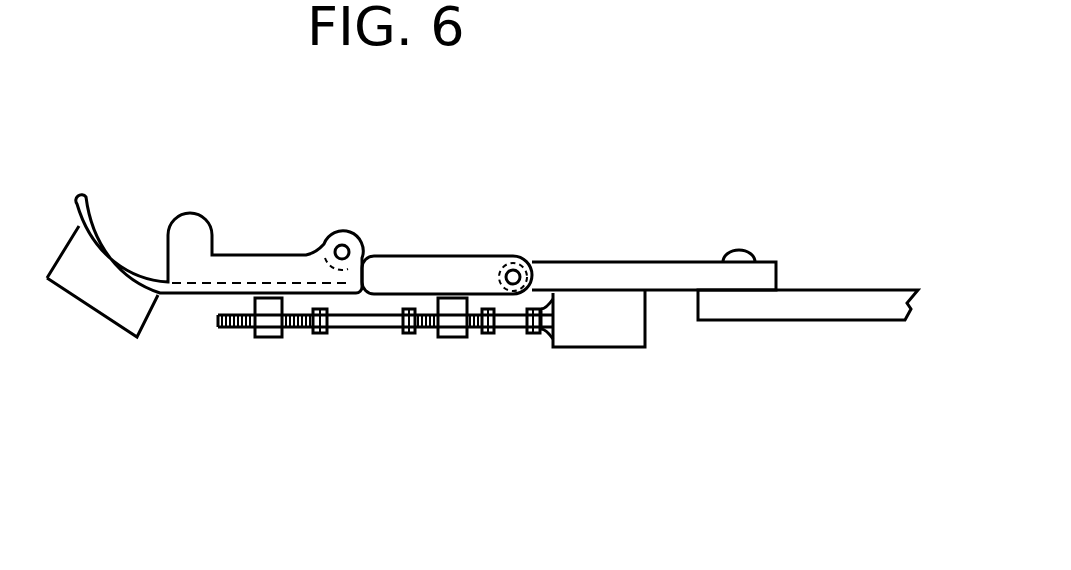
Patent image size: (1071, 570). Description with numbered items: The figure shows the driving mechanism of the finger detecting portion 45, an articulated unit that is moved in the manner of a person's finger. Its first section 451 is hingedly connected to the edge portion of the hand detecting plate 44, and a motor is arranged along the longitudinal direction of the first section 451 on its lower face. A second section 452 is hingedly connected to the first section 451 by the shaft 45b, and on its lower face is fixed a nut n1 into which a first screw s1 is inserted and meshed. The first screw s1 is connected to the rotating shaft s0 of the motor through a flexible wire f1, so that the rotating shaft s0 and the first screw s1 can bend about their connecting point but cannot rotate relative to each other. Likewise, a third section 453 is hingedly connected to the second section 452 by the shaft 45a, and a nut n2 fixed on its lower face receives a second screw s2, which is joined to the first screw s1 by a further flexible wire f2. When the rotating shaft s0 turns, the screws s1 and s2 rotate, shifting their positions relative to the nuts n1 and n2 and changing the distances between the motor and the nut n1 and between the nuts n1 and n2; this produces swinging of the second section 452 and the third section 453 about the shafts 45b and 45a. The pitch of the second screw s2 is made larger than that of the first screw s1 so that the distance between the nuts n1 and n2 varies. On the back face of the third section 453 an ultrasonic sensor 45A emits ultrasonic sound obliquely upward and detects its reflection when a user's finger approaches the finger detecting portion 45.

The hand detecting plate 44 is at (783, 310).
The finger detecting portion 45 is at (562, 158).
The first section 451 is at (670, 268).
The second section 452 is at (447, 262).
The third section 453 is at (258, 270).
The ultrasonic sensor 45A is at (95, 298).
The shaft 45a is at (348, 247).
The shaft 45b is at (533, 268).
The rotating shaft s0 is at (540, 333).
The first screw s1 is at (423, 330).
The second screw s2 is at (232, 327).
The nut n1 is at (455, 338).
The nut n2 is at (272, 333).
The flexible wire f1 is at (517, 330).
The flexible wire f2 is at (363, 332).